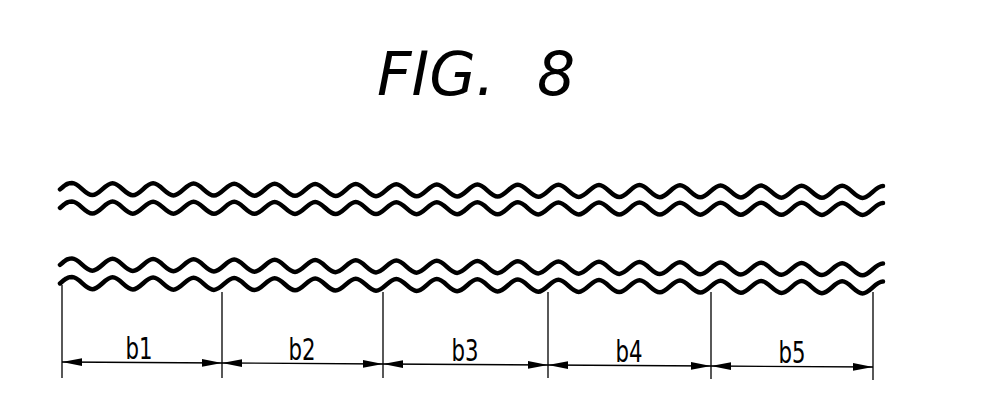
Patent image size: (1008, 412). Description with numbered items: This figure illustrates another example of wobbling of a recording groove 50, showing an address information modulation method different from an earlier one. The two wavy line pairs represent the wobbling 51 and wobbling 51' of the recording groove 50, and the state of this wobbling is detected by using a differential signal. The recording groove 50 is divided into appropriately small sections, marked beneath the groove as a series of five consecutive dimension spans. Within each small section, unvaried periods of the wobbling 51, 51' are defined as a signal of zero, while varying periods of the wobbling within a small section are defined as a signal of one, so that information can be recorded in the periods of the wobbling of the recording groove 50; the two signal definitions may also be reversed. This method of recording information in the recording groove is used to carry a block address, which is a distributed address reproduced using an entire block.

The recording groove 50 is at (155, 223).
The wobbling 51 is at (471, 165).
The wobbling 51' is at (471, 303).